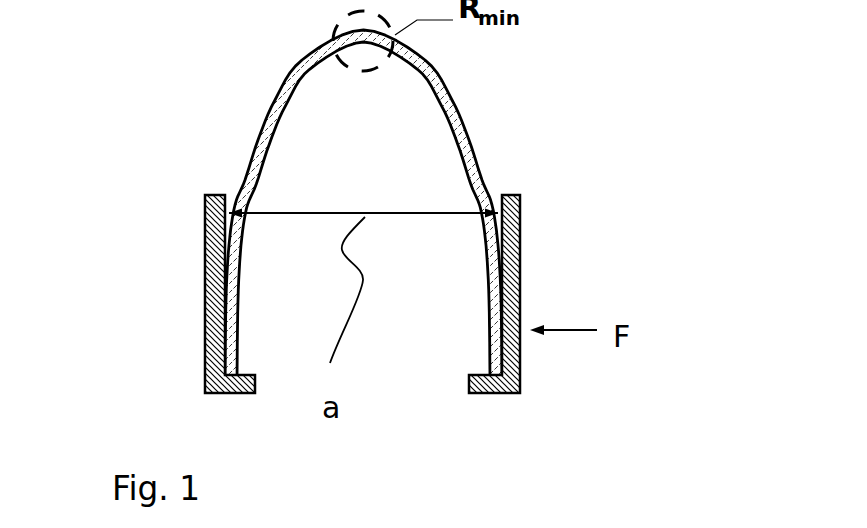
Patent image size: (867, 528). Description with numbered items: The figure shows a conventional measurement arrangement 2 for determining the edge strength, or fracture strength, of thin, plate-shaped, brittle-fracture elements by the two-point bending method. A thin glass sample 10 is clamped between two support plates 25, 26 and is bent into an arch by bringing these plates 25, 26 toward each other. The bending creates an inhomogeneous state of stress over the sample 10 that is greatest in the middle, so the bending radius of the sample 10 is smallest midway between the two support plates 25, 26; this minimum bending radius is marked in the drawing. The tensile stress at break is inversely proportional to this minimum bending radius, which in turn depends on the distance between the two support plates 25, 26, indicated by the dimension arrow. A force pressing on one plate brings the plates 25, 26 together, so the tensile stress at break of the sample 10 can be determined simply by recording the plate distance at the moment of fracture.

The measurement arrangement 2 is at (174, 78).
The thin glass sample 10 is at (448, 98).
The support plate 25 is at (205, 285).
The support plate 26 is at (520, 283).